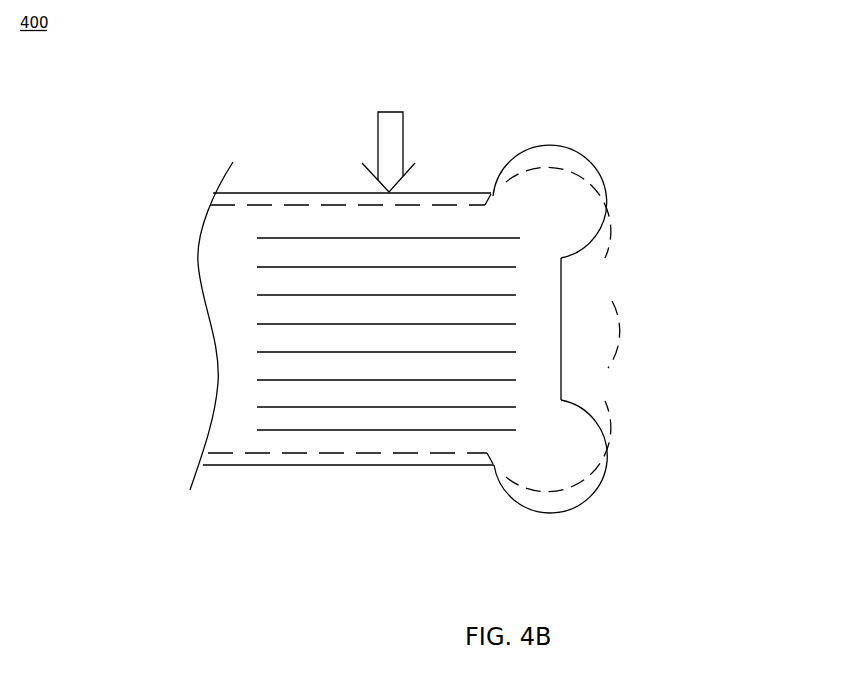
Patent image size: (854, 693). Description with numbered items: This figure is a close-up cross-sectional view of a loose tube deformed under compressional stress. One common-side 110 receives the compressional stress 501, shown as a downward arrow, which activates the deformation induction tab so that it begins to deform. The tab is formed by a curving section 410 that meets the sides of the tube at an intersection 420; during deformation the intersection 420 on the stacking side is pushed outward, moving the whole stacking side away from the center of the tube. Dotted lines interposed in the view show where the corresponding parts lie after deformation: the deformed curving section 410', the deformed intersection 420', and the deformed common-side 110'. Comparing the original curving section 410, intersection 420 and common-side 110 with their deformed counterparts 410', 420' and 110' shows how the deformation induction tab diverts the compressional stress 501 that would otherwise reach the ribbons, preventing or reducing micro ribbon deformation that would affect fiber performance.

The common-side 110 is at (351, 309).
The deformed common-side 110' is at (334, 276).
The compressional stress 501 is at (388, 143).
The curving section 410 is at (590, 187).
The deformed curving section 410' is at (621, 212).
The intersection 420 is at (589, 392).
The deformed intersection 420' is at (547, 384).